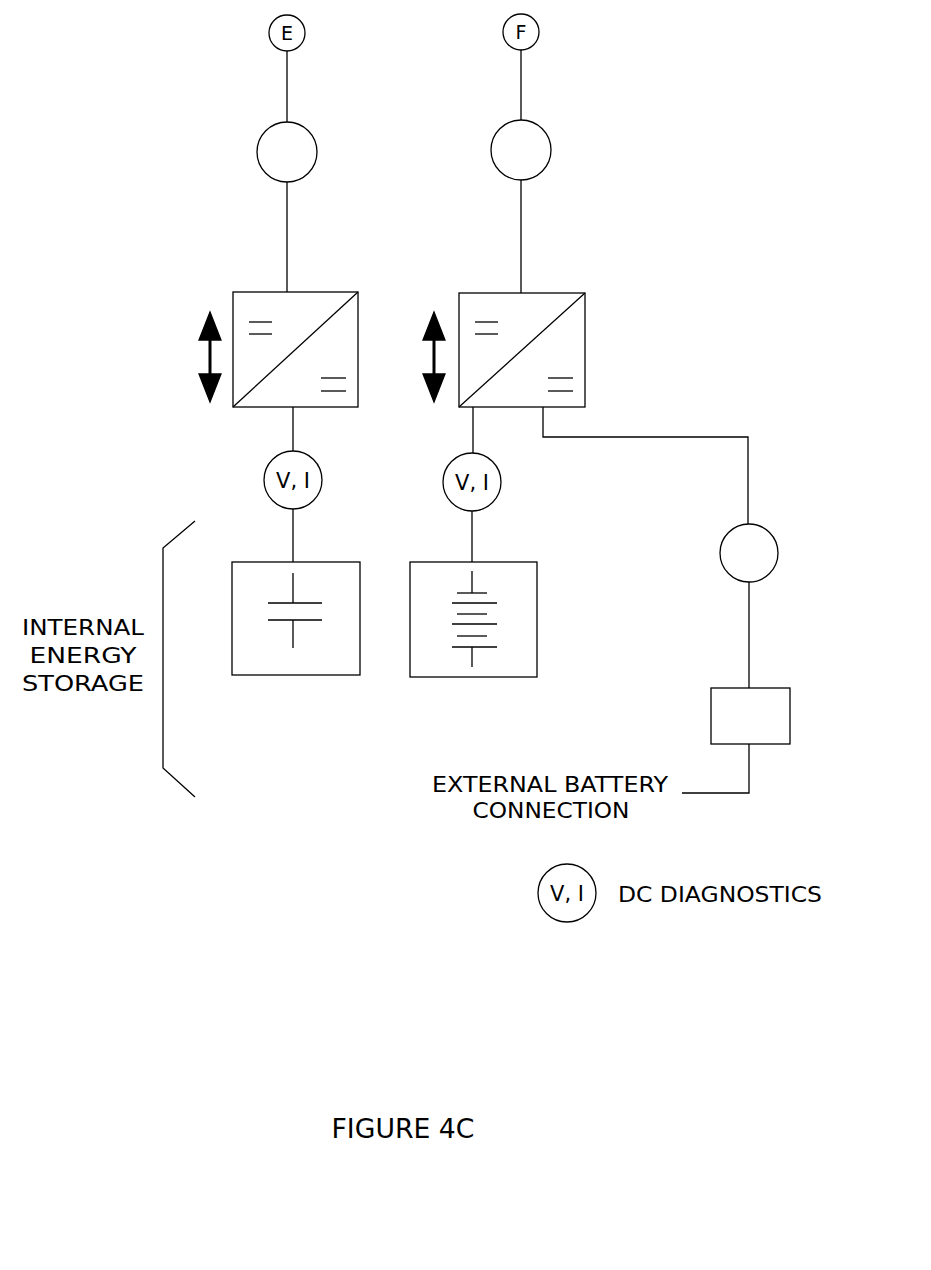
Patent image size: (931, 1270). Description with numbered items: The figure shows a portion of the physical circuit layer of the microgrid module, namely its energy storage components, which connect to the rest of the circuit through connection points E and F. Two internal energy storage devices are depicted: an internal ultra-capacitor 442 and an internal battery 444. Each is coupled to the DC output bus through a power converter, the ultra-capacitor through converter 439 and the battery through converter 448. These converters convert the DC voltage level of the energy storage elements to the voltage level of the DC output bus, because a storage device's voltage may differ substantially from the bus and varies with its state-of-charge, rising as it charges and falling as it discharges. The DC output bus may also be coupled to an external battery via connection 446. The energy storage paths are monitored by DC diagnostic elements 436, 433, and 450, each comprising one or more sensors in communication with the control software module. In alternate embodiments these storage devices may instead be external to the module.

The DC diagnostic element 436 is at (243, 152).
The DC diagnostic element 433 is at (558, 150).
The converter 439 is at (220, 349).
The converter 448 is at (551, 350).
The internal ultra-capacitor 442 is at (292, 678).
The internal battery 444 is at (519, 658).
The DC diagnostic element 450 is at (716, 538).
The connection 446 is at (729, 696).